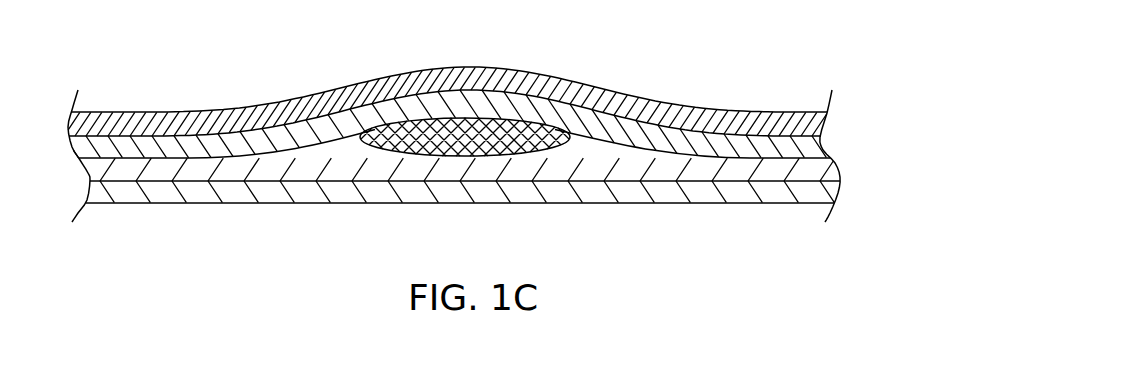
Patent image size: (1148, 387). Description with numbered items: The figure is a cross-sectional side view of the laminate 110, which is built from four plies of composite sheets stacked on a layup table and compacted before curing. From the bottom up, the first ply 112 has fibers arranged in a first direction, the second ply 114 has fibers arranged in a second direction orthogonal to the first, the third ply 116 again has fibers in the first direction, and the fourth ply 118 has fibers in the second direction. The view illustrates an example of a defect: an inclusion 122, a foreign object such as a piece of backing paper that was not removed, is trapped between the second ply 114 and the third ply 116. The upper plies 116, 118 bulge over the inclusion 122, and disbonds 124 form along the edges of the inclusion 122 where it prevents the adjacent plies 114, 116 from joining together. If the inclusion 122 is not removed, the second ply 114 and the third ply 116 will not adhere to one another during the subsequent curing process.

The laminate 110 is at (734, 57).
The first ply 112 is at (765, 193).
The second ply 114 is at (833, 168).
The third ply 116 is at (820, 145).
The fourth ply 118 is at (817, 124).
The inclusion 122 is at (543, 127).
The disbonds 124 is at (583, 215).